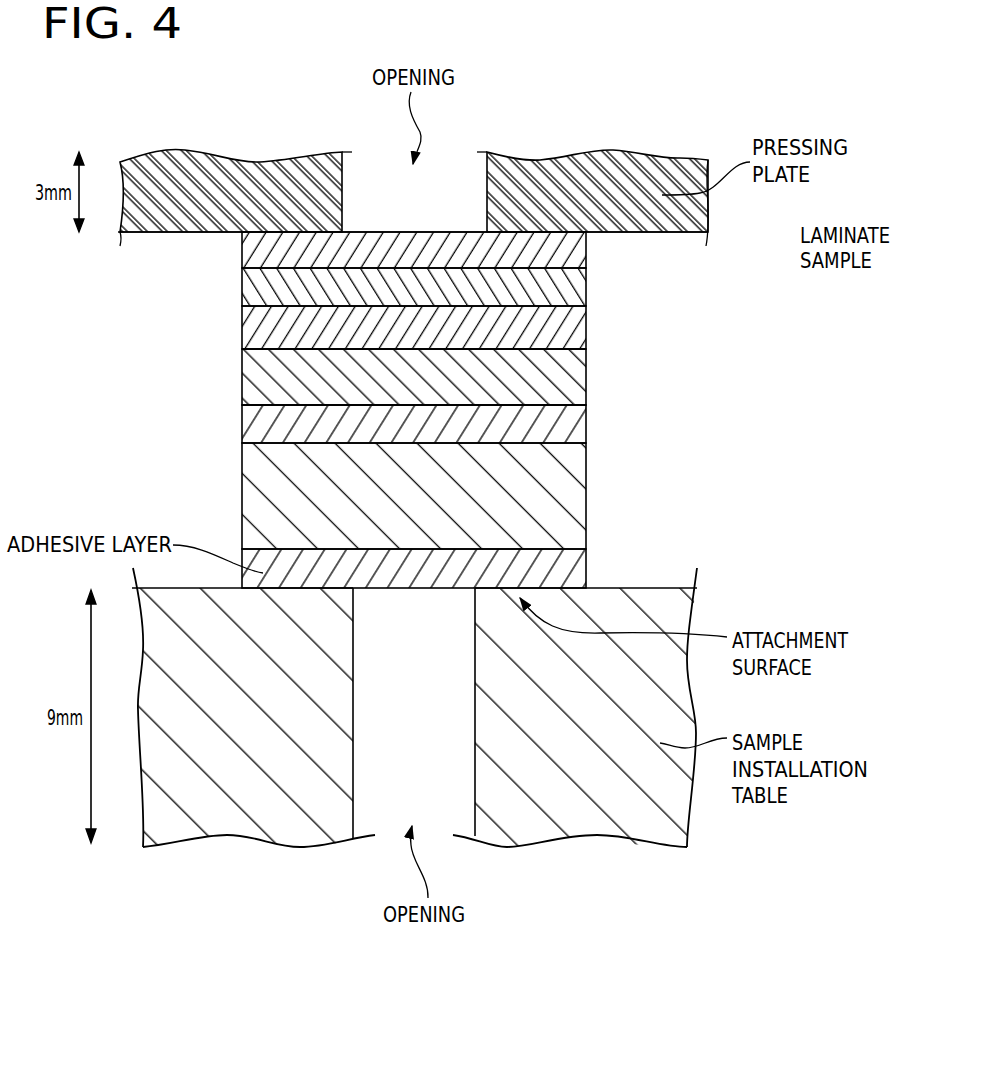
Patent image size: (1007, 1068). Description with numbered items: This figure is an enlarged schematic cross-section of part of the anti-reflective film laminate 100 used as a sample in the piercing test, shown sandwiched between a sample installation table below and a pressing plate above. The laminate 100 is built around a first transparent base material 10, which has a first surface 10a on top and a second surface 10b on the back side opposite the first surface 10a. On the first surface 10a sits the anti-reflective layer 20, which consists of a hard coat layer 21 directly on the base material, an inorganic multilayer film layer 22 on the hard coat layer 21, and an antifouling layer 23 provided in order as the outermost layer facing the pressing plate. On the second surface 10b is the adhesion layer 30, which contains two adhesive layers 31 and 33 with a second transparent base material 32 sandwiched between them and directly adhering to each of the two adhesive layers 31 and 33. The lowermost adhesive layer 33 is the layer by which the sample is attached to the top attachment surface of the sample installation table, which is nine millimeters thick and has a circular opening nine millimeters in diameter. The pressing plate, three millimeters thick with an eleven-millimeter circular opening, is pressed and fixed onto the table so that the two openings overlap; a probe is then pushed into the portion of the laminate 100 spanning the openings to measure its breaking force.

The anti-reflective film laminate 100 is at (487, 400).
The anti-reflective layer 20 is at (463, 290).
The antifouling layer 23 is at (563, 252).
The inorganic multilayer film layer 22 is at (563, 292).
The hard coat layer 21 is at (441, 327).
The first transparent base material 10 is at (563, 380).
The first surface 10a is at (278, 350).
The second surface 10b is at (278, 407).
The adhesion layer 30 is at (463, 496).
The adhesive layer 31 is at (563, 427).
The second transparent base material 32 is at (563, 497).
The adhesive layer 33 is at (441, 568).